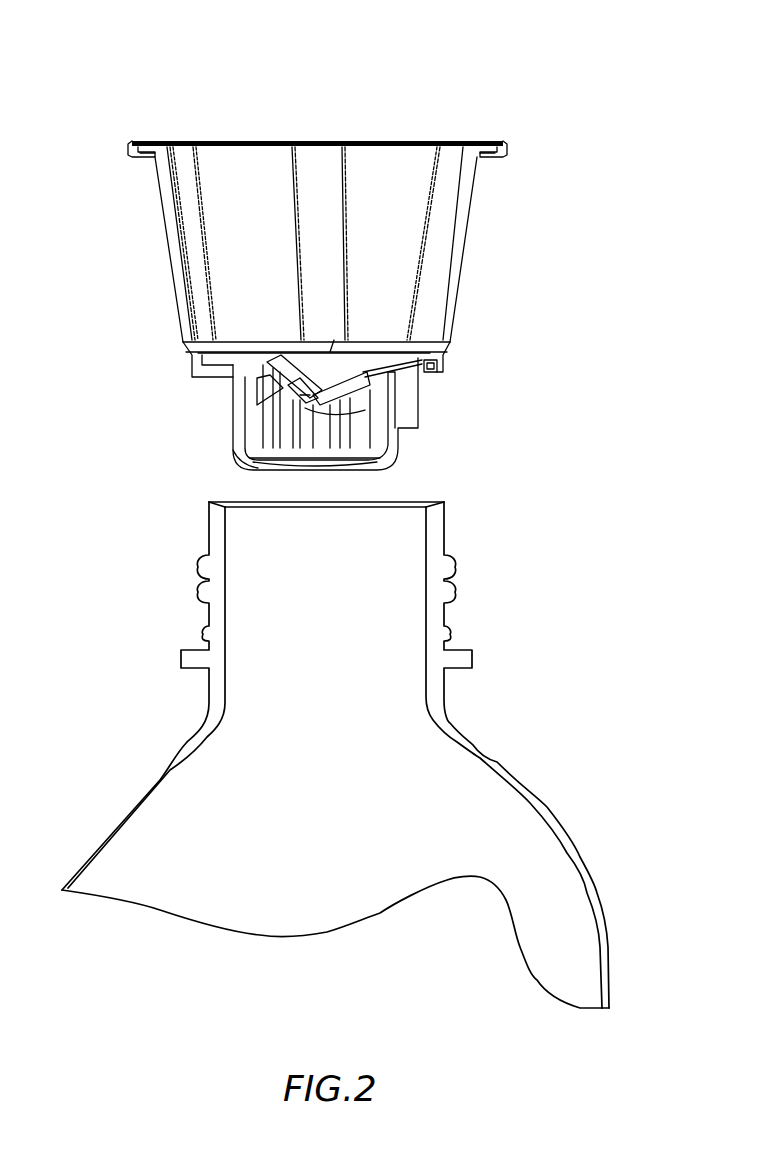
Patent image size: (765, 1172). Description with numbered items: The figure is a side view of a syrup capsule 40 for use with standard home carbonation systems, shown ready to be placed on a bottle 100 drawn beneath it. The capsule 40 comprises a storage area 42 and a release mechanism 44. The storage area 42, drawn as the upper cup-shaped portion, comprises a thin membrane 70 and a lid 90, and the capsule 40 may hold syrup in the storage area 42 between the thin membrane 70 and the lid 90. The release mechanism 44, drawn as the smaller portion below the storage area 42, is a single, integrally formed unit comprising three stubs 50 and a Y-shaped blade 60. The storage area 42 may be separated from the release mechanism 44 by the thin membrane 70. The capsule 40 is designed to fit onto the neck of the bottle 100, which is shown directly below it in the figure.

The syrup capsule 40 is at (497, 206).
The storage area 42 is at (154, 255).
The release mechanism 44 is at (192, 420).
The stubs 50 is at (413, 413).
The Y-shaped blade 60 is at (440, 368).
The thin membrane 70 is at (425, 340).
The lid 90 is at (481, 145).
The bottle 100 is at (487, 815).